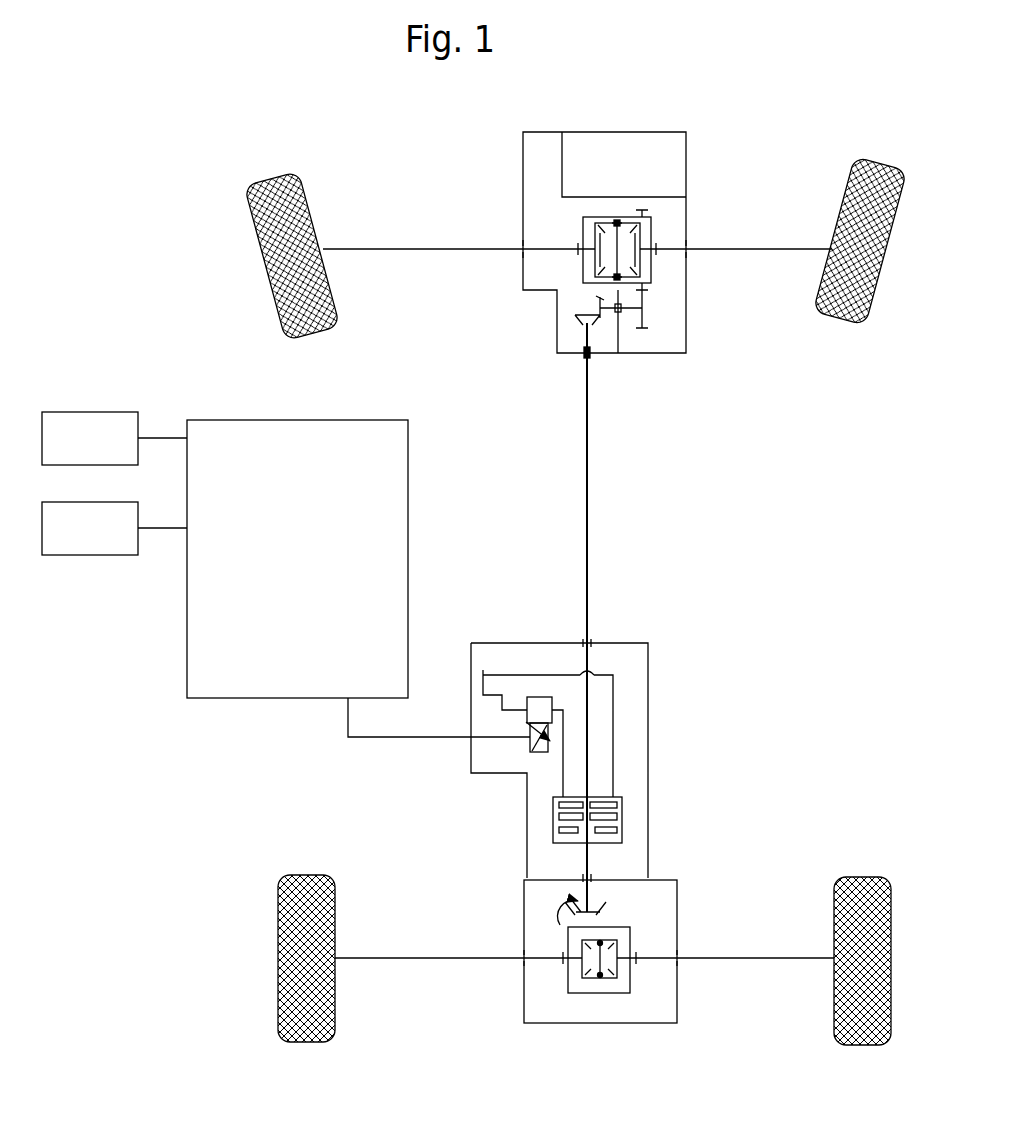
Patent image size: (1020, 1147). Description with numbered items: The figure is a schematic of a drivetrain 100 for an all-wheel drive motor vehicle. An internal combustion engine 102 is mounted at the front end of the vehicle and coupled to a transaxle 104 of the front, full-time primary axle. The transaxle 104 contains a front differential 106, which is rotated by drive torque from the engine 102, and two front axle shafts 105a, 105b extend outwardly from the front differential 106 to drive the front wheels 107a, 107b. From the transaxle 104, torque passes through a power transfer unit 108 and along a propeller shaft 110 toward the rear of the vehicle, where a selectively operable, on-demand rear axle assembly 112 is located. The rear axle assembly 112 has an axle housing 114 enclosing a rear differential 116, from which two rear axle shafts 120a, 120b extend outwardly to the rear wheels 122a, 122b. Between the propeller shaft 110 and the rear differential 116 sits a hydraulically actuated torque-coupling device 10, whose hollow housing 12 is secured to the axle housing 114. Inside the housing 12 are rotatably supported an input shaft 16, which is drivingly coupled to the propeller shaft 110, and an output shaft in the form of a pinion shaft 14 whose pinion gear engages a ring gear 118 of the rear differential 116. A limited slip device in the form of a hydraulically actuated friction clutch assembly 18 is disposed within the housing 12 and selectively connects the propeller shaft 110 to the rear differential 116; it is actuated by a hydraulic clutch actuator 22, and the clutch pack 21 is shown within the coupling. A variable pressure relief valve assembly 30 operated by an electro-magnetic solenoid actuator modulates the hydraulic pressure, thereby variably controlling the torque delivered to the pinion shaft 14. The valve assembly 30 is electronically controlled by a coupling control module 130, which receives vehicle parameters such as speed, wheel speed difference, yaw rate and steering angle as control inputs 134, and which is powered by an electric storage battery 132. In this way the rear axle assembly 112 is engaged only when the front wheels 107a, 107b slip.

The drivetrain 100 is at (752, 464).
The internal combustion engine 102 is at (672, 161).
The transaxle 104 is at (519, 199).
The front axle shaft 105a is at (357, 249).
The front axle shaft 105b is at (795, 249).
The front differential 106 is at (657, 232).
The front wheel 107a is at (310, 344).
The front wheel 107b is at (877, 329).
The power transfer unit 108 is at (659, 335).
The propeller shaft 110 is at (587, 513).
The rear axle assembly 112 is at (617, 965).
The axle housing 114 is at (523, 893).
The rear differential assembly 116 is at (641, 988).
The ring gear 118 is at (576, 996).
The rear axle shaft 120a is at (365, 958).
The rear axle shaft 120b is at (814, 958).
The rear wheel 122a is at (303, 1043).
The rear wheel 122b is at (862, 1046).
The coupling control module 130 is at (383, 420).
The electric storage battery 132 is at (90, 411).
The control inputs 134 is at (90, 556).
The torque-coupling device 10 is at (599, 738).
The housing 12 is at (648, 672).
The pinion shaft 14 is at (587, 858).
The input shaft 16 is at (590, 777).
The friction clutch assembly 18 is at (624, 818).
The clutch pack 21 is at (610, 843).
The hydraulic clutch actuator 22 is at (551, 813).
The variable pressure relief valve assembly 30 is at (540, 695).